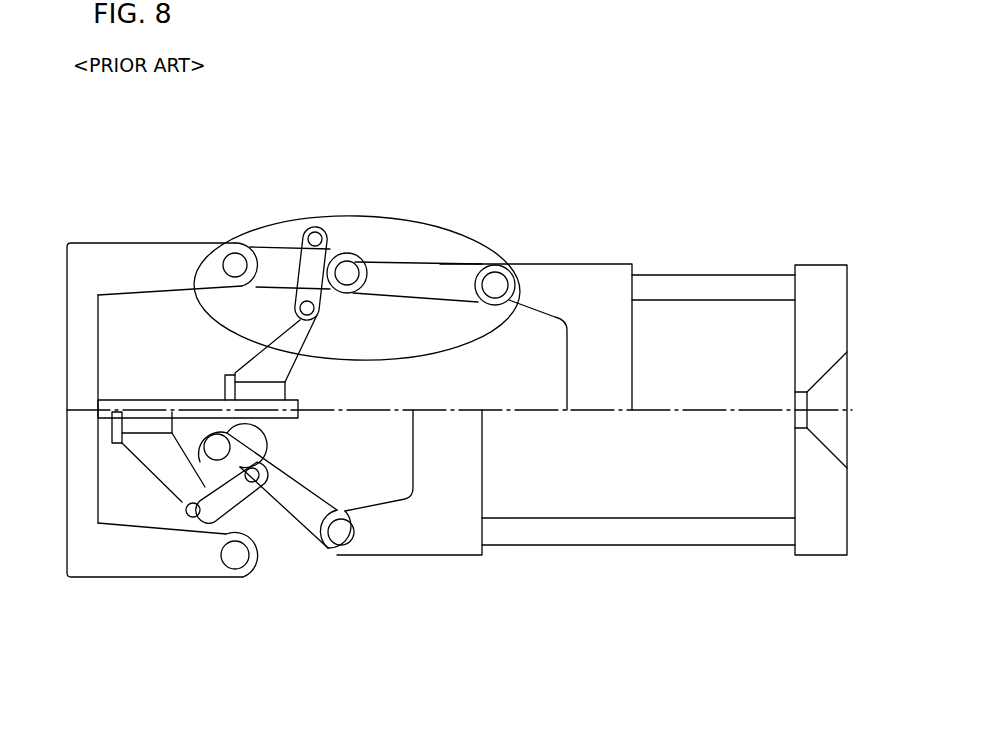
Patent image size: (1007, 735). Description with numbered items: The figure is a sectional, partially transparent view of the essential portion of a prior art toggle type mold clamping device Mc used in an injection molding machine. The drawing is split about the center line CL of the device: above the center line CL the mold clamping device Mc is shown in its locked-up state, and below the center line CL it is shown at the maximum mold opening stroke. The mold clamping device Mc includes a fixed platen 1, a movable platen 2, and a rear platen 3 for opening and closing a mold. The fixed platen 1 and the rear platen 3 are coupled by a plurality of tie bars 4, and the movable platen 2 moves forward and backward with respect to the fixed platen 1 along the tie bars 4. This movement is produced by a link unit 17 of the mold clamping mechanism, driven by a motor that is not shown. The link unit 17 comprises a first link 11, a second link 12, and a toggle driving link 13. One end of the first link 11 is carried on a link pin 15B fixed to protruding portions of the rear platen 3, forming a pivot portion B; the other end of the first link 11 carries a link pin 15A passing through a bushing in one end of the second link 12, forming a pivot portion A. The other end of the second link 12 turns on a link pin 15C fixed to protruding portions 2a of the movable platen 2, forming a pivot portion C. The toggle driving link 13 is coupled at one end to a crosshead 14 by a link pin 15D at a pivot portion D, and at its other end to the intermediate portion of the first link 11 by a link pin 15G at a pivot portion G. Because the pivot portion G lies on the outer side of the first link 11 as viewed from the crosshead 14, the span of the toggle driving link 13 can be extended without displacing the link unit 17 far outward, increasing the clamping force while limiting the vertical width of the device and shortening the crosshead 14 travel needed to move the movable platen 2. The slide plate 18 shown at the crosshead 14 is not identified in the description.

The fixed platen 1 is at (828, 265).
The movable platen 2 is at (597, 265).
The protruding portions of the movable platen 2a is at (530, 272).
The rear platen 3 is at (108, 243).
The tie bars 4 is at (712, 274).
The first link 11 is at (273, 247).
The second link 12 is at (440, 262).
The toggle driving link 13 is at (330, 250).
The crosshead 14 is at (205, 350).
The link pin 15A is at (363, 258).
The link pin 15B is at (222, 248).
The link pin 15C is at (496, 284).
The link pin 15D is at (313, 310).
The link pin 15G is at (322, 232).
The link unit 17 is at (257, 258).
The slide plate 18 is at (182, 403).
The pivot portion A is at (350, 271).
The pivot portion B is at (233, 263).
The pivot portion C is at (477, 266).
The pivot portion D is at (312, 318).
The pivot portion G is at (316, 235).
The mold clamping device Mc is at (443, 108).
The center line CL is at (477, 411).